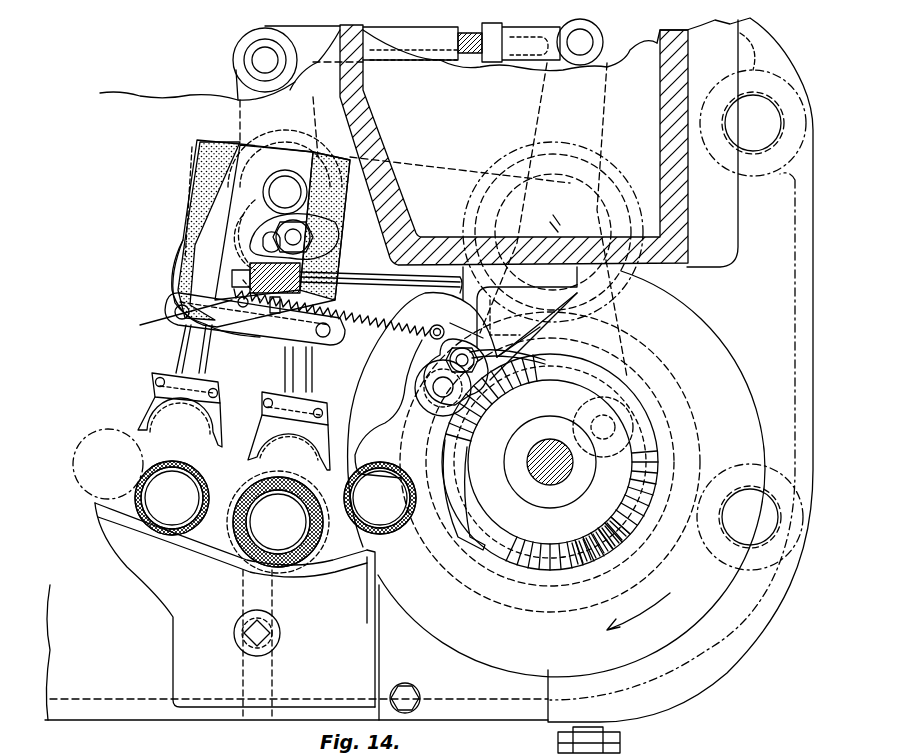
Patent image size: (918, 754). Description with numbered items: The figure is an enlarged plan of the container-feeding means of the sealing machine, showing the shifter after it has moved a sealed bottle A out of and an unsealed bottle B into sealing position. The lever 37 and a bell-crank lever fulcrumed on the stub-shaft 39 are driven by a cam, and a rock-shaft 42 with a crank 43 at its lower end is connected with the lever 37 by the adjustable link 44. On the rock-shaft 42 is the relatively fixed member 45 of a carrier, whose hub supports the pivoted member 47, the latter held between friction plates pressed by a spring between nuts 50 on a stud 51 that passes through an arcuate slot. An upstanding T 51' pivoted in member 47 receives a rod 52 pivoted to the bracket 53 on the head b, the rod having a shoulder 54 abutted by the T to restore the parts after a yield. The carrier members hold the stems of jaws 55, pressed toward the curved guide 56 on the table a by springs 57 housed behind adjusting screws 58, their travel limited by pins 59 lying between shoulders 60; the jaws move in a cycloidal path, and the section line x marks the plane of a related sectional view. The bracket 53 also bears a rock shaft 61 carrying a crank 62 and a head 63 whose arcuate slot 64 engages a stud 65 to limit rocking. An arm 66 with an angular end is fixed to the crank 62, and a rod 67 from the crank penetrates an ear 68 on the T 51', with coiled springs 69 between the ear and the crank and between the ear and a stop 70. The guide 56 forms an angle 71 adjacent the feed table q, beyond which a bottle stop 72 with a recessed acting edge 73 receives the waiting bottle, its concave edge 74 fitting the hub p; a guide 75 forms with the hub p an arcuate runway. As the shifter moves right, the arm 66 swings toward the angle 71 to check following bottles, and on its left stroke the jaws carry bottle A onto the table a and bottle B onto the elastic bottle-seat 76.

The lever 37 is at (608, 125).
The stub-shaft 39 is at (557, 228).
The rock-shaft 42 is at (285, 192).
The crank 43 is at (240, 92).
The adjustable link 44 is at (430, 47).
The fixed member of carrier 45 is at (192, 205).
The pivoted member of carrier 47 is at (332, 333).
The nuts 50 is at (310, 236).
The stud 51 is at (282, 229).
The T 51' is at (237, 261).
The rod 52 is at (366, 280).
The bracket 53 is at (548, 327).
The shoulder 54 is at (338, 277).
The jaws 55 is at (258, 426).
The guide 56 is at (173, 543).
The springs 57 is at (183, 233).
The adjusting screws 58 is at (232, 146).
The pins 59 is at (175, 308).
The shoulders 60 is at (176, 362).
The rock shaft 61 is at (432, 387).
The crank 62 is at (520, 307).
The head 63 is at (492, 393).
The arcuate slot 64 is at (546, 370).
The stud 65 is at (476, 355).
The arm 66 is at (475, 506).
The rod 67 is at (422, 420).
The ear 68 is at (268, 320).
The coiled springs 69 is at (243, 305).
The stop 70 is at (212, 320).
The angle 71 is at (376, 553).
The bottle stop 72 is at (388, 409).
The acting edge 73 is at (392, 467).
The concave edge 74 is at (453, 495).
The guide 75 is at (452, 650).
The elastic bottle-seat 76 is at (322, 537).
The table a is at (111, 720).
The head b is at (672, 267).
The hub p is at (640, 420).
The feed table q is at (728, 367).
The section line x— x is at (259, 313).
The bottle A is at (276, 523).
The bottle B is at (380, 498).
The shaft C is at (565, 468).